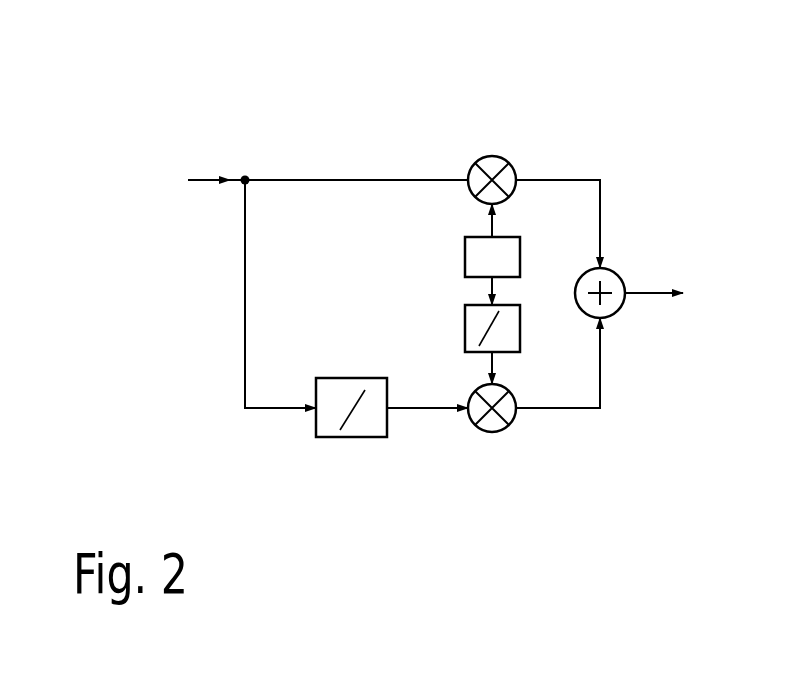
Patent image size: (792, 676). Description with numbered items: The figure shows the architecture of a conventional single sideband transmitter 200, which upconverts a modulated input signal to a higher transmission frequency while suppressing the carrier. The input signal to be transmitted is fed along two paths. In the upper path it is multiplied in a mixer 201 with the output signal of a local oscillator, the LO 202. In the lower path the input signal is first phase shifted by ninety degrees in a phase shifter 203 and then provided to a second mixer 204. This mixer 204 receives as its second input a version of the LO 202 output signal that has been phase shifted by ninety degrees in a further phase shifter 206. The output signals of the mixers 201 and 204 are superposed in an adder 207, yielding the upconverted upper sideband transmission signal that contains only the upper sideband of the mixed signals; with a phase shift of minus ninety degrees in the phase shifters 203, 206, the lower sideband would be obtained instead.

The SSB transmitter 200 is at (613, 96).
The mixer 201 is at (483, 161).
The LO 202 is at (520, 252).
The phase shifter 203 is at (352, 438).
The mixer 204 is at (503, 430).
The phase shifter 206 is at (520, 318).
The adder 207 is at (619, 276).